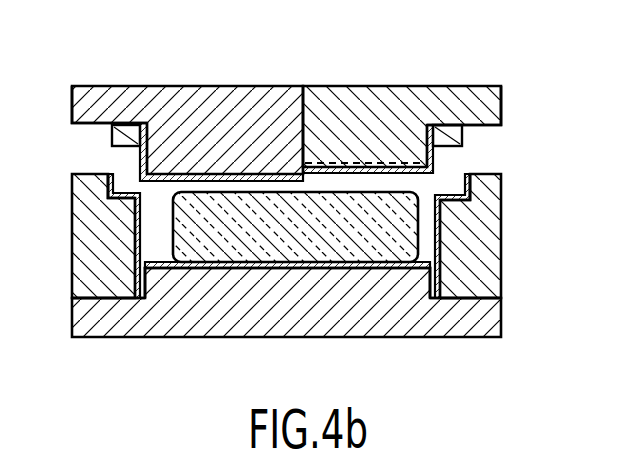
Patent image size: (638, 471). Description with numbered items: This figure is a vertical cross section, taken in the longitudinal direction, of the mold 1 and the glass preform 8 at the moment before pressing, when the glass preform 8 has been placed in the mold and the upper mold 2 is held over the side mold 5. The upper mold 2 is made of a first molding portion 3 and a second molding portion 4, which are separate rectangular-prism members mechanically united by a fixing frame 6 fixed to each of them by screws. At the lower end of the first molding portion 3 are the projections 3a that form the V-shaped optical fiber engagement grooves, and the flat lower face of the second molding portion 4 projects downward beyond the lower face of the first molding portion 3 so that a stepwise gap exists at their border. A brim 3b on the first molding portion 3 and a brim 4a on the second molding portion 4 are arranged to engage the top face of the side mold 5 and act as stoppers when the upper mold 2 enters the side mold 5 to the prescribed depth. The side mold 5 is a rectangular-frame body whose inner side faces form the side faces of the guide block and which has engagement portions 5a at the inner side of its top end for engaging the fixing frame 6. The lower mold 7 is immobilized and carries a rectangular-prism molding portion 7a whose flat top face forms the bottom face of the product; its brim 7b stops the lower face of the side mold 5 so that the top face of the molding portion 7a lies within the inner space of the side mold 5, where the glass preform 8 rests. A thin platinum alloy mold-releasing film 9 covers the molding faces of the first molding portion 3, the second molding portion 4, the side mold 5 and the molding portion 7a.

The mold 1 is at (493, 48).
The upper mold 2 is at (283, 88).
The first molding portion 3 is at (413, 95).
The projections 3a is at (347, 164).
The brim 3b is at (502, 104).
The second molding portion 4 is at (197, 100).
The brim 4a is at (97, 100).
The side mold 5 is at (82, 228).
The engagement portions 5a is at (137, 195).
The fixing frame 6 is at (112, 135).
The lower mold 7 is at (260, 305).
The molding portion 7a is at (373, 293).
The brim 7b is at (82, 313).
The glass preform 8 is at (413, 240).
The mold-releasing film 9 is at (140, 160).